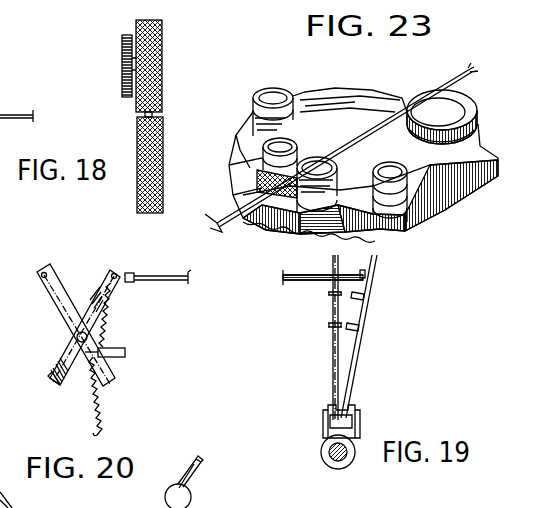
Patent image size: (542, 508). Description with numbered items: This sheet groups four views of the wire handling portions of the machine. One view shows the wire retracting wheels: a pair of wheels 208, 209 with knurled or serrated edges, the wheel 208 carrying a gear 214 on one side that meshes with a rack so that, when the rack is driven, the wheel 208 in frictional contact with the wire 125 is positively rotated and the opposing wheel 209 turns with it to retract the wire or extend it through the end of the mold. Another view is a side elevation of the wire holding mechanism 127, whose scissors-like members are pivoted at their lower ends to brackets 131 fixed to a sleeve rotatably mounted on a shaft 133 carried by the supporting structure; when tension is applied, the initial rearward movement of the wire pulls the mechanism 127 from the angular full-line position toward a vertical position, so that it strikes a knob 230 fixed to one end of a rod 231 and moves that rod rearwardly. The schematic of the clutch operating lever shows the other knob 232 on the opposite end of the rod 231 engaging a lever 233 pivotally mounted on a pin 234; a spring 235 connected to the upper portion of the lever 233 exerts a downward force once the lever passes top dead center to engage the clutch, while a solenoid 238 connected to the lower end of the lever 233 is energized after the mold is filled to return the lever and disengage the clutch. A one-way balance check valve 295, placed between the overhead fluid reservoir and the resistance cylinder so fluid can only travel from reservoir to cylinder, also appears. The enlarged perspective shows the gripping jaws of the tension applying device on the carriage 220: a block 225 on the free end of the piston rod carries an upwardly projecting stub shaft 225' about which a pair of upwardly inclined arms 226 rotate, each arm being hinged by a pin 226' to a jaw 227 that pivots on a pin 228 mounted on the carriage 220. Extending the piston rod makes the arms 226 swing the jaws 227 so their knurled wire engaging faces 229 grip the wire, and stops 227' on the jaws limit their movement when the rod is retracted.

In FIG. 18, the wire 125 is at (31, 114).
In FIG. 23, the wire 125 is at (243, 232).
In FIG. 19, the wire holding mechanism 127 is at (374, 366).
In FIG. 19, the brackets 131 is at (360, 421).
In FIG. 19, the shaft 133 is at (347, 458).
In FIG. 18, the wheel 208 is at (152, 72).
In FIG. 18, the wheel 209 is at (158, 166).
In FIG. 18, the gear 214 is at (119, 62).
In FIG. 23, the carriage 220 is at (363, 220).
In FIG. 23, the block 225 is at (486, 213).
In FIG. 23, the stub shaft 225' is at (447, 95).
In FIG. 23, the arms 226 is at (396, 158).
In FIG. 23, the pin 226' is at (333, 168).
In FIG. 23, the jaw 227 is at (250, 191).
In FIG. 23, the stops 227' is at (332, 158).
In FIG. 23, the pin 228 is at (255, 190).
In FIG. 23, the knurled wire engaging face 229 is at (250, 212).
In FIG. 19, the knob 230 is at (371, 268).
In FIG. 19, the rod 231 is at (320, 280).
In FIG. 20, the knob 232 is at (130, 273).
In FIG. 20, the lever 233 is at (88, 317).
In FIG. 20, the pin 234 is at (77, 336).
In FIG. 20, the spring 235 is at (106, 332).
In FIG. 20, the solenoid 238 is at (125, 357).
In FIG. 20, the one-way balance check valve 295 is at (192, 490).